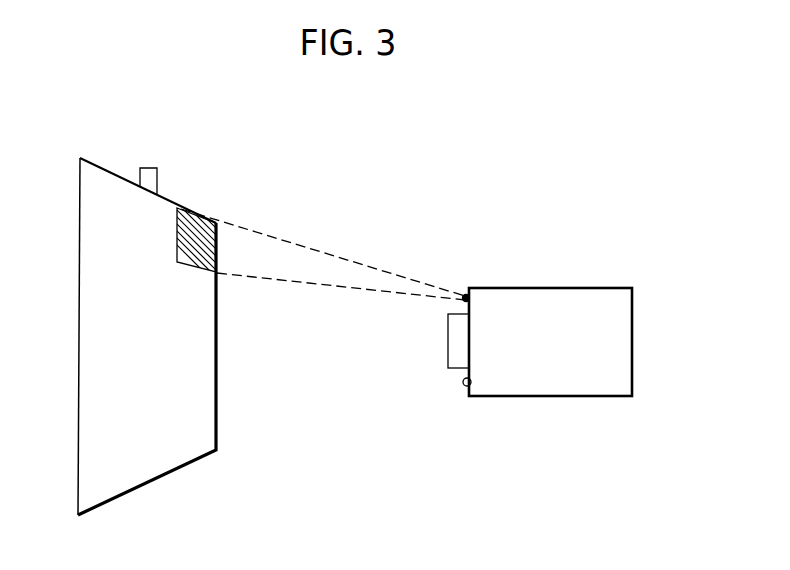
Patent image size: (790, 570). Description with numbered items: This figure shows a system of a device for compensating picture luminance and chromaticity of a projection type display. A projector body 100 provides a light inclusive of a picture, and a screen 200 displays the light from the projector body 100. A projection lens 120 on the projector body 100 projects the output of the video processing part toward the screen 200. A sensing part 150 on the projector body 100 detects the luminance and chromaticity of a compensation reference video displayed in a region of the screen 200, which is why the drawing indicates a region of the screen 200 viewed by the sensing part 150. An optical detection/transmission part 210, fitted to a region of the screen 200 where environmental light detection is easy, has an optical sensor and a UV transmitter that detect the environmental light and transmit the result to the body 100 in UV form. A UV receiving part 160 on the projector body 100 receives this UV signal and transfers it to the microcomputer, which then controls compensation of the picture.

The projector body 100 is at (597, 290).
The projection lens 120 is at (448, 344).
The sensing part 150 is at (465, 295).
The UV receiving part 160 is at (463, 385).
The screen 200 is at (145, 480).
The optical detection/transmission part 210 is at (152, 168).